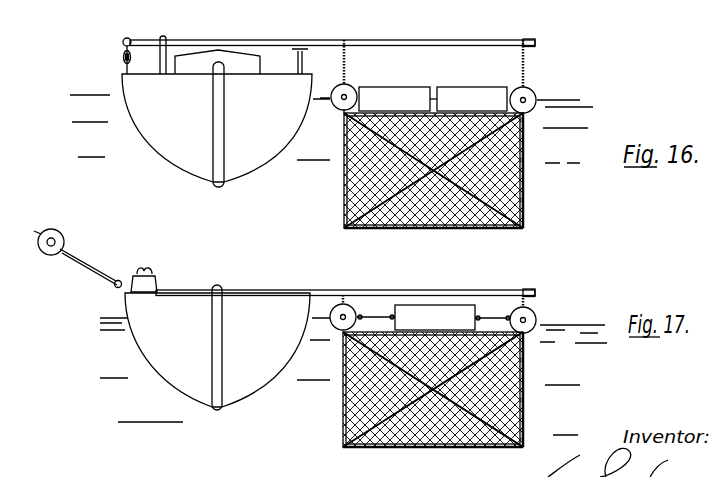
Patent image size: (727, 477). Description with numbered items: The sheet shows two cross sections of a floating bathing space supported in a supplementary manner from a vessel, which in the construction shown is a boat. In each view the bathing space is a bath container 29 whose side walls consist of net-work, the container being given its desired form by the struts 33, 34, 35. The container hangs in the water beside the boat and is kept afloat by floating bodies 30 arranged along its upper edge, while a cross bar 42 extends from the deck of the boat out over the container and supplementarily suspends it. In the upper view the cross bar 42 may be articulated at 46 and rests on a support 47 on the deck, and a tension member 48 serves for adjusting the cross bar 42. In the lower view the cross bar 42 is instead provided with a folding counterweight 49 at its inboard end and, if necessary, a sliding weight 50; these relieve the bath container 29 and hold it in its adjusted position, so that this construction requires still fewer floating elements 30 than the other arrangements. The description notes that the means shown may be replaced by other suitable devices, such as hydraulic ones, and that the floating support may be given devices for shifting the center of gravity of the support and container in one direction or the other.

In FIG. 16, the bath container 29 is at (436, 128).
In FIG. 17, the bath container 29 is at (426, 404).
In FIG. 16, the floating bodies 30 is at (470, 93).
In FIG. 17, the floating bodies 30 is at (438, 311).
In FIG. 16, the strut 33 is at (524, 160).
In FIG. 17, the strut 33 is at (524, 377).
In FIG. 16, the strut 34 is at (492, 228).
In FIG. 17, the strut 34 is at (516, 447).
In FIG. 16, the strut 35 is at (346, 210).
In FIG. 17, the strut 35 is at (345, 428).
In FIG. 16, the cross bar 42 is at (262, 40).
In FIG. 17, the cross bar 42 is at (374, 291).
In FIG. 16, the articulation 46 is at (166, 36).
In FIG. 16, the support 47 is at (304, 63).
In FIG. 16, the tension member 48 is at (122, 57).
In FIG. 17, the folding counterweight 49 is at (82, 232).
In FIG. 17, the sliding weight 50 is at (155, 273).